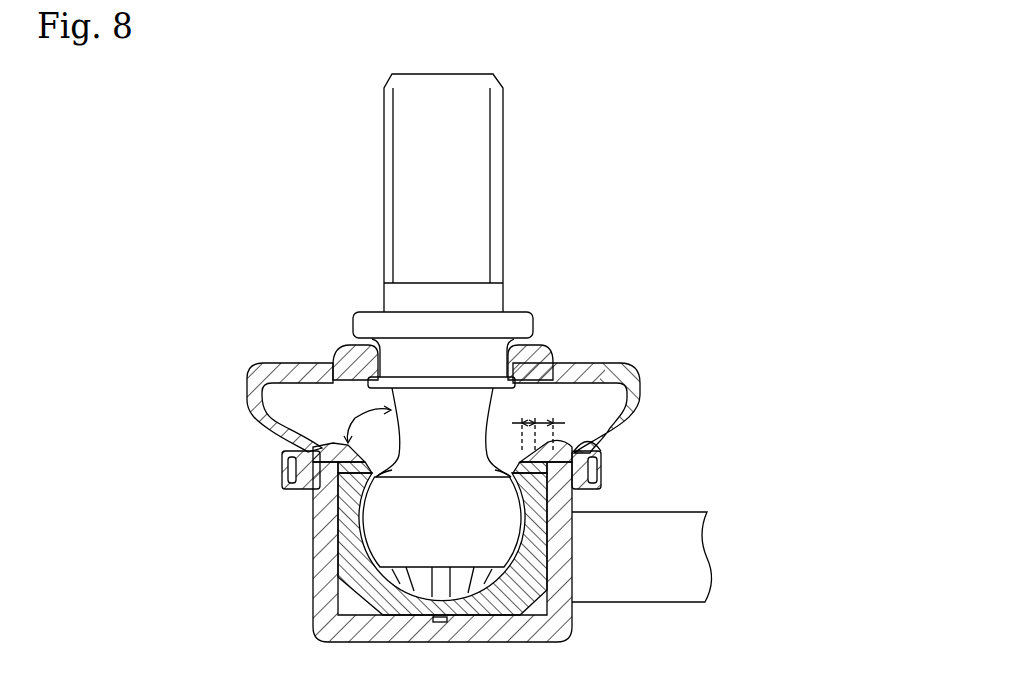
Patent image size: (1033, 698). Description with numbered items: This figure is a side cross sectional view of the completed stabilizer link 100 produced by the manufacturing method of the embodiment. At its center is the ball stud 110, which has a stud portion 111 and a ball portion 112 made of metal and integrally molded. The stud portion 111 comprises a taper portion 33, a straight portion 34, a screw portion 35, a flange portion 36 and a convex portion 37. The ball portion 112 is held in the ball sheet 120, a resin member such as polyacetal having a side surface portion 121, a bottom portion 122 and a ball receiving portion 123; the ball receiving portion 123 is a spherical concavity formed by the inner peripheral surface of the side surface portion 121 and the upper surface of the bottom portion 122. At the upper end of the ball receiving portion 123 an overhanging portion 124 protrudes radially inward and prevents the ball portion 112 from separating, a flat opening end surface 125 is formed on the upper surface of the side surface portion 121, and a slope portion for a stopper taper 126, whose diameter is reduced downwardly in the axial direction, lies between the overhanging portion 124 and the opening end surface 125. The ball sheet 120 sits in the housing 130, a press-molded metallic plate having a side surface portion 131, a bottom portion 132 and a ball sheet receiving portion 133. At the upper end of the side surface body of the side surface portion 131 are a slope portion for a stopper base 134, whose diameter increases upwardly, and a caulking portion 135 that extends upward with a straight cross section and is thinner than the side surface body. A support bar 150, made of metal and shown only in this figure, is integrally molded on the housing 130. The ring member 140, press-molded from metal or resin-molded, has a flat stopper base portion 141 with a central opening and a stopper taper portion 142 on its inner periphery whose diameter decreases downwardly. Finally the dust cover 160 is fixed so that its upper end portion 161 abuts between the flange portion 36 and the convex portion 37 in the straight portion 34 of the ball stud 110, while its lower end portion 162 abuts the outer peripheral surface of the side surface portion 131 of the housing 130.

The stabilizer link 100 is at (640, 172).
The ball stud 110 is at (503, 112).
The stud portion 111 is at (410, 178).
The ball portion 112 is at (523, 597).
The ball sheet 120 is at (568, 623).
The side surface portion 121 is at (550, 538).
The bottom portion 122 is at (386, 628).
The ball receiving portion 123 is at (368, 545).
The overhanging portion 124 is at (385, 465).
The opening end surface 125 is at (399, 443).
The slope portion for a stopper taper 126 is at (391, 468).
The housing 130 is at (313, 597).
The side surface portion 131 is at (560, 578).
The bottom portion 132 is at (470, 632).
The ball sheet receiving portion 133 is at (343, 562).
The slope portion for a stopper base 134 is at (601, 472).
The caulking portion 135 is at (598, 443).
The ring member 140 is at (245, 497).
The stopper base portion 141 is at (313, 495).
The stopper taper portion 142 is at (330, 512).
The support bar 150 is at (683, 530).
The dust cover 160 is at (638, 384).
The upper end portion 161 is at (340, 352).
The lower end portion 162 is at (285, 460).
The taper portion 33 is at (466, 405).
The straight portion 34 is at (495, 362).
The screw portion 35 is at (503, 178).
The flange portion 36 is at (522, 327).
The convex portion 37 is at (422, 380).